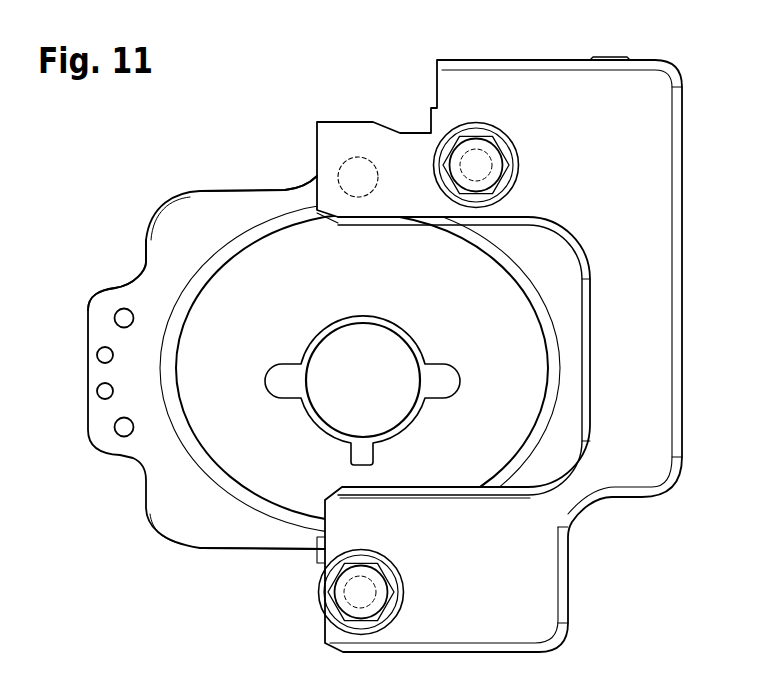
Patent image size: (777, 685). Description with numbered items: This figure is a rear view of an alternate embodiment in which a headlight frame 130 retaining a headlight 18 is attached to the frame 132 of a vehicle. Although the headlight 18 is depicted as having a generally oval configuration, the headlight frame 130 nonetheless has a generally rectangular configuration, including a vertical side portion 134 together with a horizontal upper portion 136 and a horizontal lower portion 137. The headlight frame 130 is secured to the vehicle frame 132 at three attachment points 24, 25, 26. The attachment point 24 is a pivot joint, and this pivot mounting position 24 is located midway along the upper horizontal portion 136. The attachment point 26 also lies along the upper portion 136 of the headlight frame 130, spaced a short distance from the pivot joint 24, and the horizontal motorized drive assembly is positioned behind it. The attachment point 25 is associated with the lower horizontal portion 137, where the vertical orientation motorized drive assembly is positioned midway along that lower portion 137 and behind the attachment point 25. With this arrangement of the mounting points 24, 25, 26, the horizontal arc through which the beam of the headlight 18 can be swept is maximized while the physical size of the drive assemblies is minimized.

The headlight frame 130 is at (144, 536).
The frame of a vehicle 132 is at (647, 54).
The vertical side portion 134 is at (145, 259).
The horizontal upper portion 136 is at (253, 188).
The horizontal lower portion 137 is at (238, 553).
The headlight 18 is at (213, 425).
The attachment point (pivot joint) 24 is at (362, 157).
The attachment point 26 is at (505, 133).
The attachment point 25 is at (319, 611).